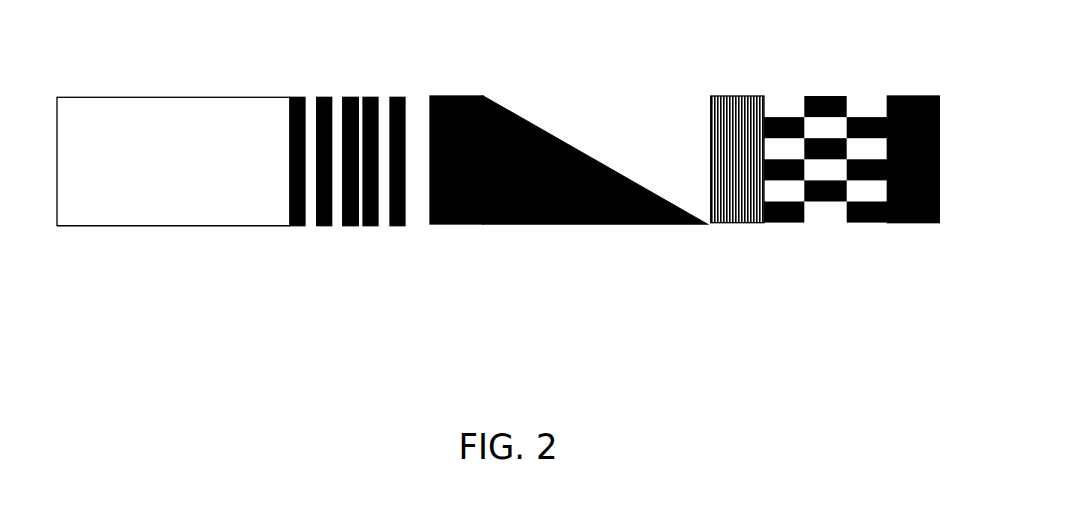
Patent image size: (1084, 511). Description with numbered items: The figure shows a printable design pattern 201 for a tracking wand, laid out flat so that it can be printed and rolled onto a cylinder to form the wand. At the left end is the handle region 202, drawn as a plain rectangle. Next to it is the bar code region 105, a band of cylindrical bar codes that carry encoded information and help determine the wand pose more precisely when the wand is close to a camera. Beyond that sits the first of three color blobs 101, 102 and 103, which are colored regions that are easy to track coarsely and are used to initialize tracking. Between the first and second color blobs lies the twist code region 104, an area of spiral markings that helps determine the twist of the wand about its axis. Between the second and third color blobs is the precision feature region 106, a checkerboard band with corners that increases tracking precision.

The printable design pattern 201 is at (98, 97).
The handle region 202 is at (203, 226).
The bar code region 105 is at (355, 227).
The color blob 101 is at (457, 96).
The twist code region 104 is at (595, 224).
The color blob 102 is at (733, 95).
The precision feature region 106 is at (870, 223).
The color blob 103 is at (898, 95).